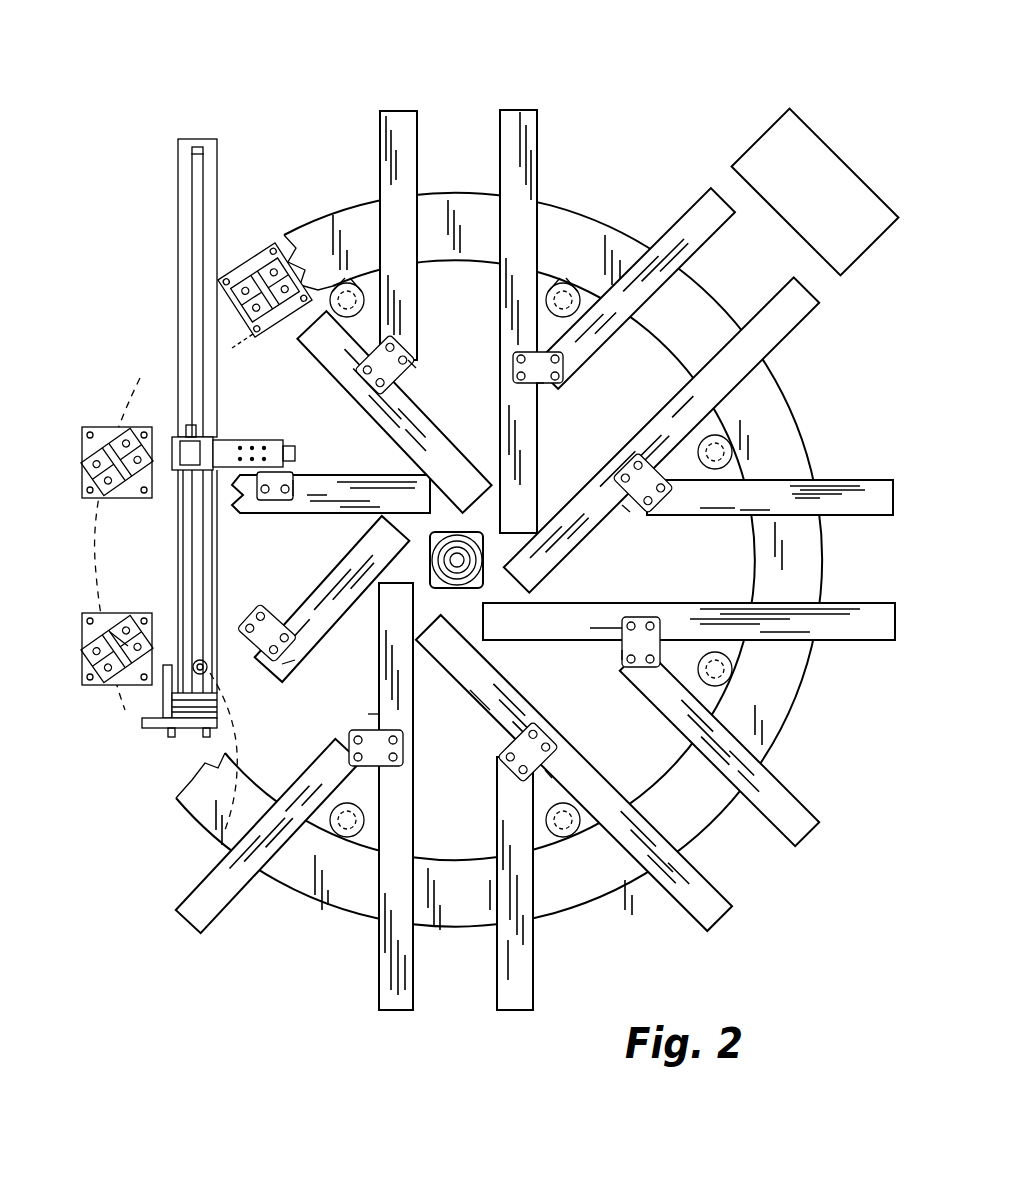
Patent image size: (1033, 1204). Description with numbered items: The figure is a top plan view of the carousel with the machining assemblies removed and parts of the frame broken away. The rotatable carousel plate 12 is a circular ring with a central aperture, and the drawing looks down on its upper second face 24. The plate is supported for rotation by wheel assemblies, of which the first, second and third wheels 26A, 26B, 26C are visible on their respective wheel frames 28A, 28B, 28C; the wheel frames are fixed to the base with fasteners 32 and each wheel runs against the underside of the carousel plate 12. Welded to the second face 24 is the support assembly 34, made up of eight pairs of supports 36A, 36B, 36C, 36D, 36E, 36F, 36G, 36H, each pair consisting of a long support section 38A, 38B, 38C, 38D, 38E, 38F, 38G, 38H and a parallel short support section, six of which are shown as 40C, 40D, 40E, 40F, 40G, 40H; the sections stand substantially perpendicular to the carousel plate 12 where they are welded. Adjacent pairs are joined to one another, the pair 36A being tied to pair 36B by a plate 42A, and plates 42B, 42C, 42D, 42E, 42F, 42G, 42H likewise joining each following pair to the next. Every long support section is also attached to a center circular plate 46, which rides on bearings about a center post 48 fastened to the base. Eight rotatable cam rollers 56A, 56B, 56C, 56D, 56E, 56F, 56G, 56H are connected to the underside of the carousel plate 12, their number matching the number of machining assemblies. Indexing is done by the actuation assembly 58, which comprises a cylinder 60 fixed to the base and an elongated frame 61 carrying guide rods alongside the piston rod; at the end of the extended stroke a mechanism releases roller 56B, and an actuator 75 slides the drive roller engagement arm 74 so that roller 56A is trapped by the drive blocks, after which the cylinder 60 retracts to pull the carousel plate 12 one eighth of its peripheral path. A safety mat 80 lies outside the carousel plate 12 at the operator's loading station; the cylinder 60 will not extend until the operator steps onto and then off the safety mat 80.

The carousel plate 12 is at (355, 935).
The second face 24 is at (597, 891).
The first wheel 26A is at (92, 666).
The second wheel 26B is at (95, 430).
The third wheel 26C is at (242, 272).
The first wheel frame 28A is at (86, 622).
The second wheel frame 28B is at (82, 462).
The third wheel frame 28C is at (268, 254).
The fasteners 32 is at (125, 632).
The support assembly 34 is at (478, 716).
The first pair of supports 36A is at (296, 668).
The second pair of supports 36B is at (296, 487).
The third pair of supports 36C is at (412, 368).
The fourth pair of supports 36D is at (540, 380).
The fifth pair of supports 36E is at (626, 512).
The sixth pair of supports 36F is at (616, 648).
The seventh pair of supports 36G is at (548, 776).
The eighth pair of supports 36H is at (372, 712).
The first long support section 38A is at (318, 610).
The first long support section 38B is at (232, 514).
The first long support section 38C is at (470, 470).
The first long support section 38D is at (516, 110).
The first long support section 38E is at (793, 291).
The first long support section 38F is at (873, 608).
The first long support section 38G is at (718, 926).
The first long support section 38H is at (398, 829).
The first short support section 40C is at (398, 112).
The first short support section 40D is at (713, 196).
The first short support section 40E is at (882, 482).
The first short support section 40F is at (797, 833).
The first short support section 40G is at (516, 1012).
The first short support section 40H is at (190, 910).
The plate 42A is at (266, 700).
The plate 42B is at (275, 486).
The plate 42C is at (372, 372).
The plate 42D is at (513, 364).
The plate 42E is at (627, 470).
The plate 42F is at (641, 620).
The plate 42G is at (512, 776).
The plate 42H is at (376, 732).
The center circular plate 46 is at (548, 592).
The center post 48 is at (452, 560).
The cam roller 56A is at (215, 838).
The cam roller 56B is at (176, 405).
The cam roller 56C is at (326, 346).
The cam roller 56D is at (558, 284).
The cam roller 56E is at (706, 442).
The cam roller 56F is at (727, 662).
The cam roller 56G is at (572, 822).
The cam roller 56H is at (338, 804).
The actuation assembly 58 is at (168, 278).
The cylinder 60 is at (198, 172).
The elongated frame 61 is at (191, 154).
The drive roller engagement arm 74 is at (168, 700).
The actuator 75 is at (152, 730).
The safety mat 80 is at (241, 432).